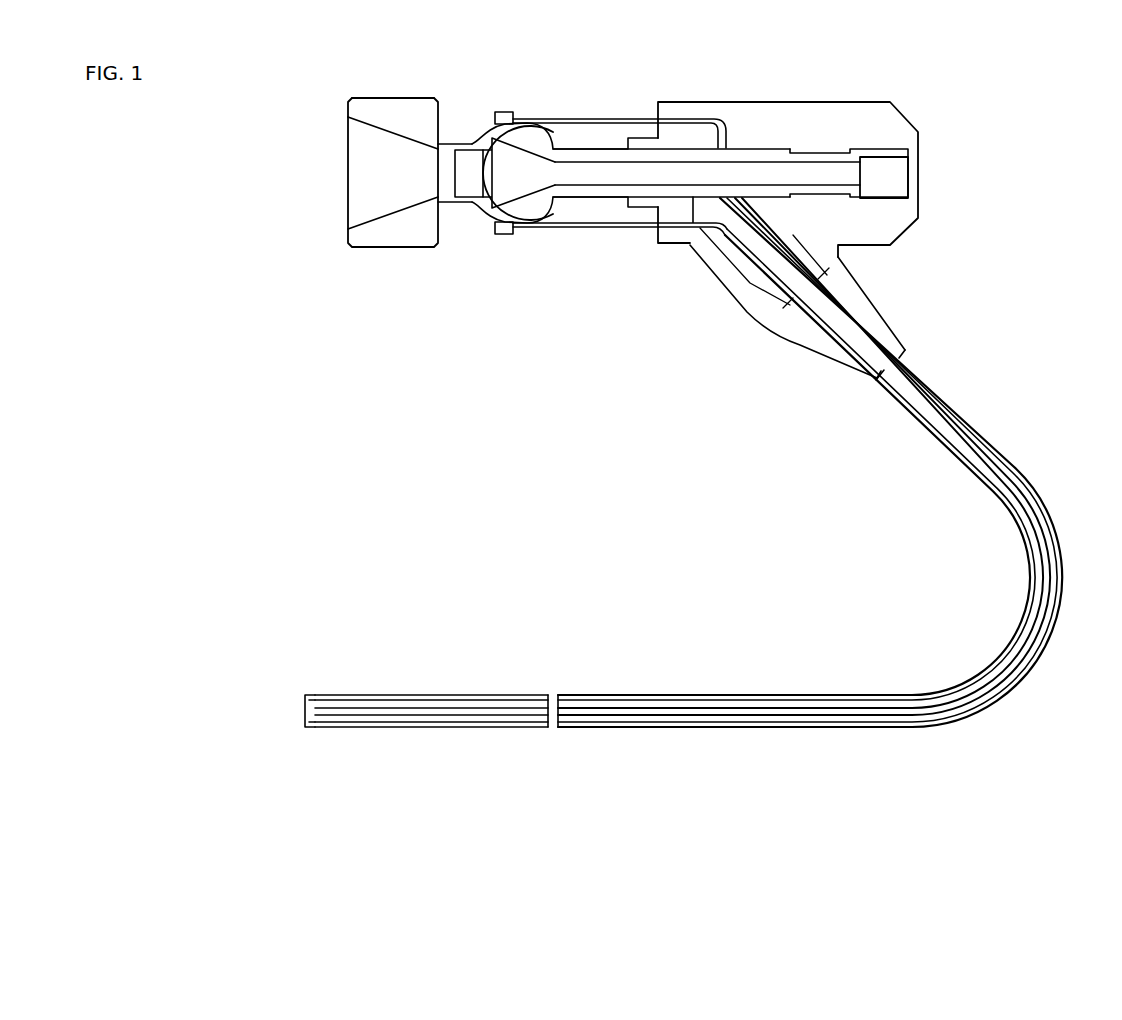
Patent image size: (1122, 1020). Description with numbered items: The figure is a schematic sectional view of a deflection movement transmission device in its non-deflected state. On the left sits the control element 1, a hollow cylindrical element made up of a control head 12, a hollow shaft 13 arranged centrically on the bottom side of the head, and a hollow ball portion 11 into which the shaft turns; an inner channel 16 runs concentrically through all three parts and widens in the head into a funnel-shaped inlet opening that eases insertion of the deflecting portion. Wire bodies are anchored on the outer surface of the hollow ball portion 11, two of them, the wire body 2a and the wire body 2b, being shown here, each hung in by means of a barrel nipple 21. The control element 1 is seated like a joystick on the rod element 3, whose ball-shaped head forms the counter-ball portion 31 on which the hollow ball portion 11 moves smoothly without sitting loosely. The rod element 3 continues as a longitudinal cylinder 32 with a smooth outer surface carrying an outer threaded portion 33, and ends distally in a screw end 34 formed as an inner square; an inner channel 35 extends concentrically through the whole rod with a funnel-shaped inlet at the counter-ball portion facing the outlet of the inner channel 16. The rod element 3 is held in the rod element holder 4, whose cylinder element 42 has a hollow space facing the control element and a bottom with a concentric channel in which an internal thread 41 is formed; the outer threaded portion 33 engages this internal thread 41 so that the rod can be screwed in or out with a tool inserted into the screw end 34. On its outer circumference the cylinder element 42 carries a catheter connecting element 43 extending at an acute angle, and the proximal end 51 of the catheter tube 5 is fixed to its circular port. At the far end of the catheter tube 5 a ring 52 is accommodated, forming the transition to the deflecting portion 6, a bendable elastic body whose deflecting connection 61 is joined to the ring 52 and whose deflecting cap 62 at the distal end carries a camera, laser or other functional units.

The control element 1 is at (400, 236).
The control head 12 is at (391, 106).
The inner channel 16 is at (386, 174).
The hollow shaft 13 is at (462, 147).
The hollow ball portion 11 is at (487, 214).
The wire body 2a is at (585, 119).
The wire body 2b is at (577, 229).
The barrel nipple 21 is at (507, 112).
The counter-ball portion 31 is at (528, 206).
The rod element 3 is at (756, 161).
The longitudinal cylinder 32 is at (673, 158).
The outer threaded portion 33 is at (820, 194).
The inner channel 35 is at (683, 172).
The rod element holder 4 is at (891, 123).
The internal thread 41 is at (827, 146).
The cylinder element 42 is at (738, 105).
The catheter connecting element 43 is at (830, 350).
The screw end 34 is at (900, 152).
The catheter tube 5 is at (1003, 452).
The proximal end 51 is at (905, 352).
The ring 52 is at (559, 728).
The deflecting portion 6 is at (382, 694).
The deflecting connection 61 is at (548, 694).
The deflecting cap 62 is at (305, 712).